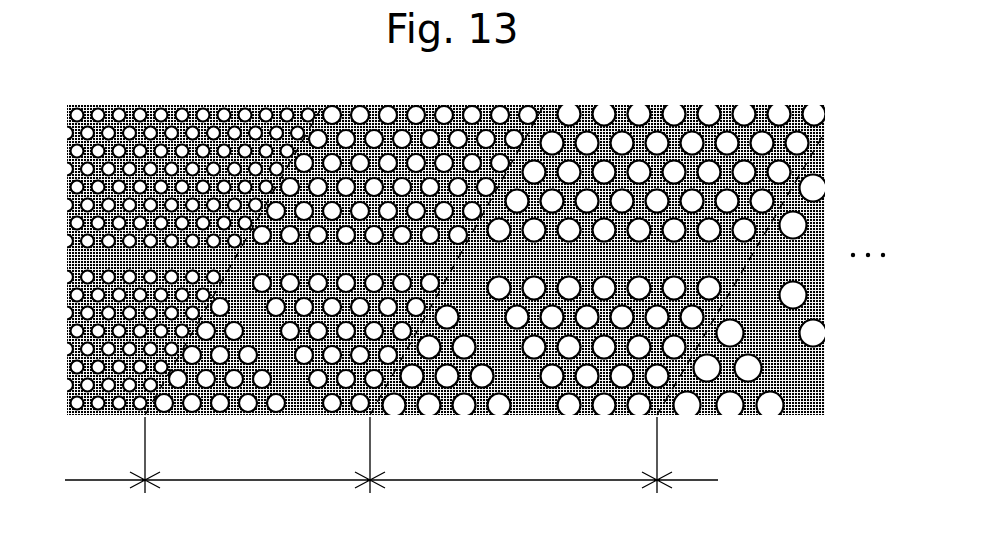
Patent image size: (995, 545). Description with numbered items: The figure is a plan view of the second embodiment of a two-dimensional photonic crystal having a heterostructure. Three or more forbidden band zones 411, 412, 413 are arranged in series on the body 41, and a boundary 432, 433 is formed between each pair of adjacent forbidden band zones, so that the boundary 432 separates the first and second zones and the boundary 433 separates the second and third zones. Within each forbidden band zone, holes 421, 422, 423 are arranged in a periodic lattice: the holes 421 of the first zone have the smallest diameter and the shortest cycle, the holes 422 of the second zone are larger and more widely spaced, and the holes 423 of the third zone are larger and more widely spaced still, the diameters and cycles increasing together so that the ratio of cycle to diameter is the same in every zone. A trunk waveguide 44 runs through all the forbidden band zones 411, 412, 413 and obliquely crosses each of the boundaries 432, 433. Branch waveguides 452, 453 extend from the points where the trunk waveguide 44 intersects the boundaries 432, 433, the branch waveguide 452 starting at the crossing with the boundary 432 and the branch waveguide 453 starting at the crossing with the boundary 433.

The body 41 is at (813, 168).
The trunk waveguide 44 is at (798, 260).
The forbidden band zone 411 is at (112, 465).
The forbidden band zone 412 is at (265, 465).
The forbidden band zone 413 is at (544, 465).
The hole 421 is at (88, 390).
The hole 422 is at (207, 384).
The hole 423 is at (410, 382).
The boundary 432 is at (297, 156).
The boundary 433 is at (508, 150).
The branch waveguide 452 is at (293, 382).
The branch waveguide 453 is at (515, 384).